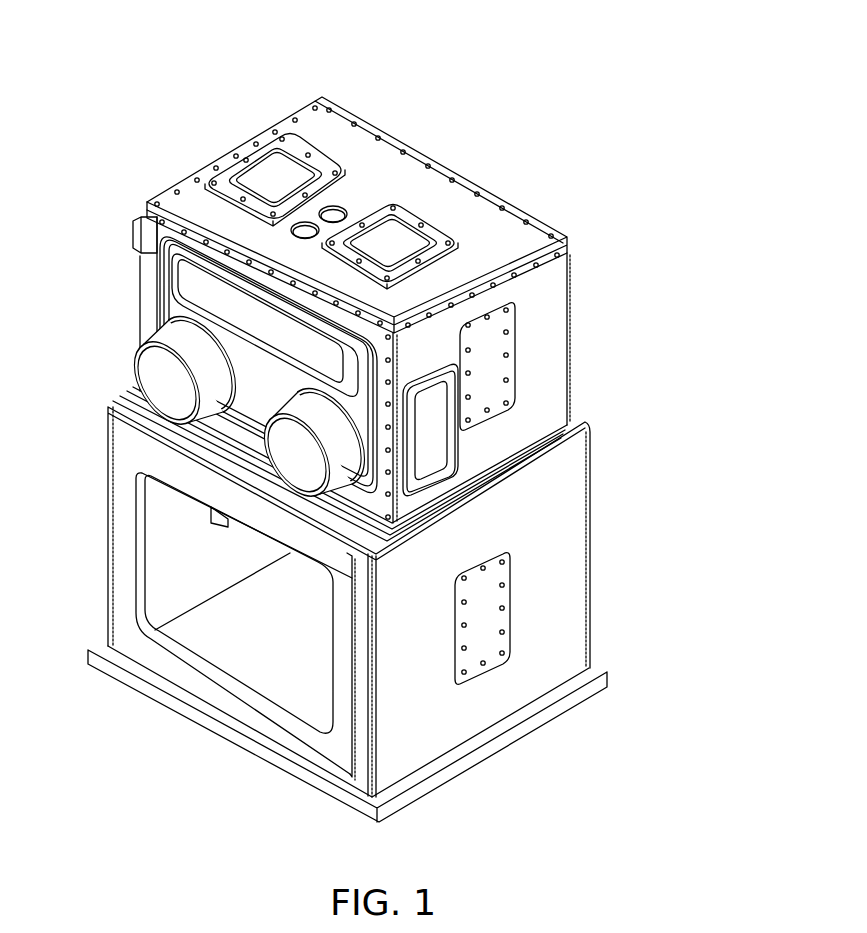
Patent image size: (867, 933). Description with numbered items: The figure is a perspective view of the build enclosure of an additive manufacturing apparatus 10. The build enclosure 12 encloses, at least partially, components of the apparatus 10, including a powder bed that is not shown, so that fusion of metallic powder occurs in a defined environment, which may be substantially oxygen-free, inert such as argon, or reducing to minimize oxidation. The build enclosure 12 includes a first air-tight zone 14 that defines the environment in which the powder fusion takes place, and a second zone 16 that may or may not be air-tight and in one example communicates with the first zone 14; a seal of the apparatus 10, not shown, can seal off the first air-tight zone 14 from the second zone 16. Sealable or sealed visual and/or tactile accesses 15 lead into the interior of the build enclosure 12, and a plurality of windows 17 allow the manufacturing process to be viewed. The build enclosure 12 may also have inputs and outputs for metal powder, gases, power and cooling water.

The additive manufacturing apparatus 10 is at (180, 92).
The build enclosure 12 is at (410, 148).
The first air-tight zone 14 is at (572, 288).
The visual and/or tactile accesses 15 is at (287, 437).
The second zone 16 is at (594, 515).
The windows 17 is at (265, 170).